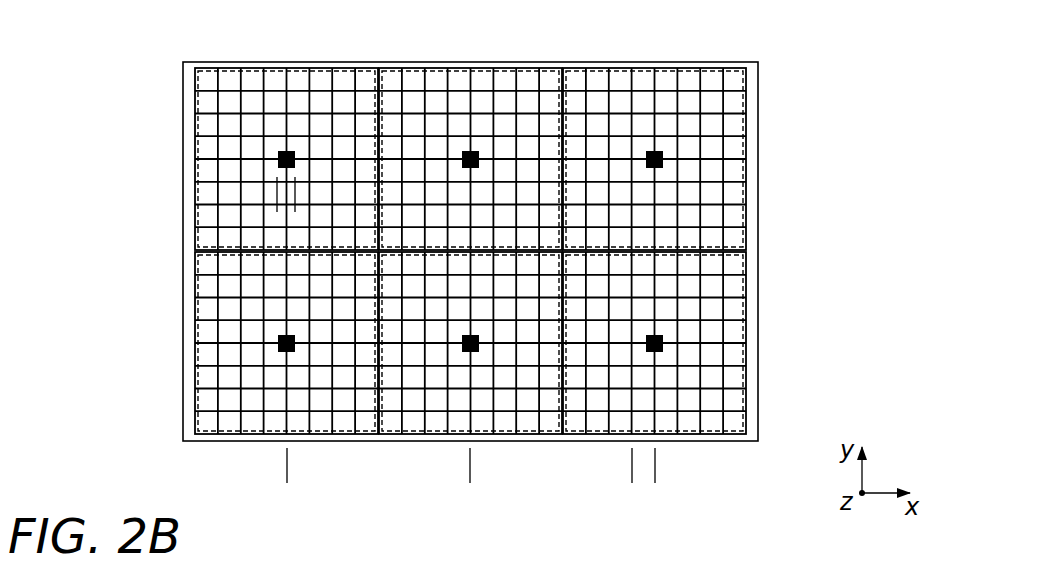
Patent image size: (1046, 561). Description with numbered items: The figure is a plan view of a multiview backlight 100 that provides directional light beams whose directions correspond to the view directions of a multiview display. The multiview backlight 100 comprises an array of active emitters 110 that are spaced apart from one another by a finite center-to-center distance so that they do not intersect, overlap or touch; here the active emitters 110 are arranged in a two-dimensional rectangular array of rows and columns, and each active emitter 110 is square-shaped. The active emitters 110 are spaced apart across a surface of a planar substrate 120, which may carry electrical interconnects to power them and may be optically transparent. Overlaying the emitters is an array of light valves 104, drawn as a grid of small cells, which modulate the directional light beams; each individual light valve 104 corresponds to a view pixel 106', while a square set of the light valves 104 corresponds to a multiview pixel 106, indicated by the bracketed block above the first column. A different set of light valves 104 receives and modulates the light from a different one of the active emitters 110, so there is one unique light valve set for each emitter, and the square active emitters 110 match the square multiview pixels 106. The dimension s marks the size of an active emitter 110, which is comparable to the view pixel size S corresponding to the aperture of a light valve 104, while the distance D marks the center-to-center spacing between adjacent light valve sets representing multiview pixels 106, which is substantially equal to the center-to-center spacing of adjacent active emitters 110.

The multiview backlight 100 is at (770, 53).
The light valve 104 is at (750, 345).
The multiview pixel 106 is at (285, 125).
The view pixel 106' is at (530, 134).
The active emitter 110 is at (275, 159).
The planar substrate 120 is at (757, 252).
The size of the active emitter s is at (333, 194).
The center-to-center distance between light valve sets D is at (470, 465).
The view pixel size S is at (593, 465).